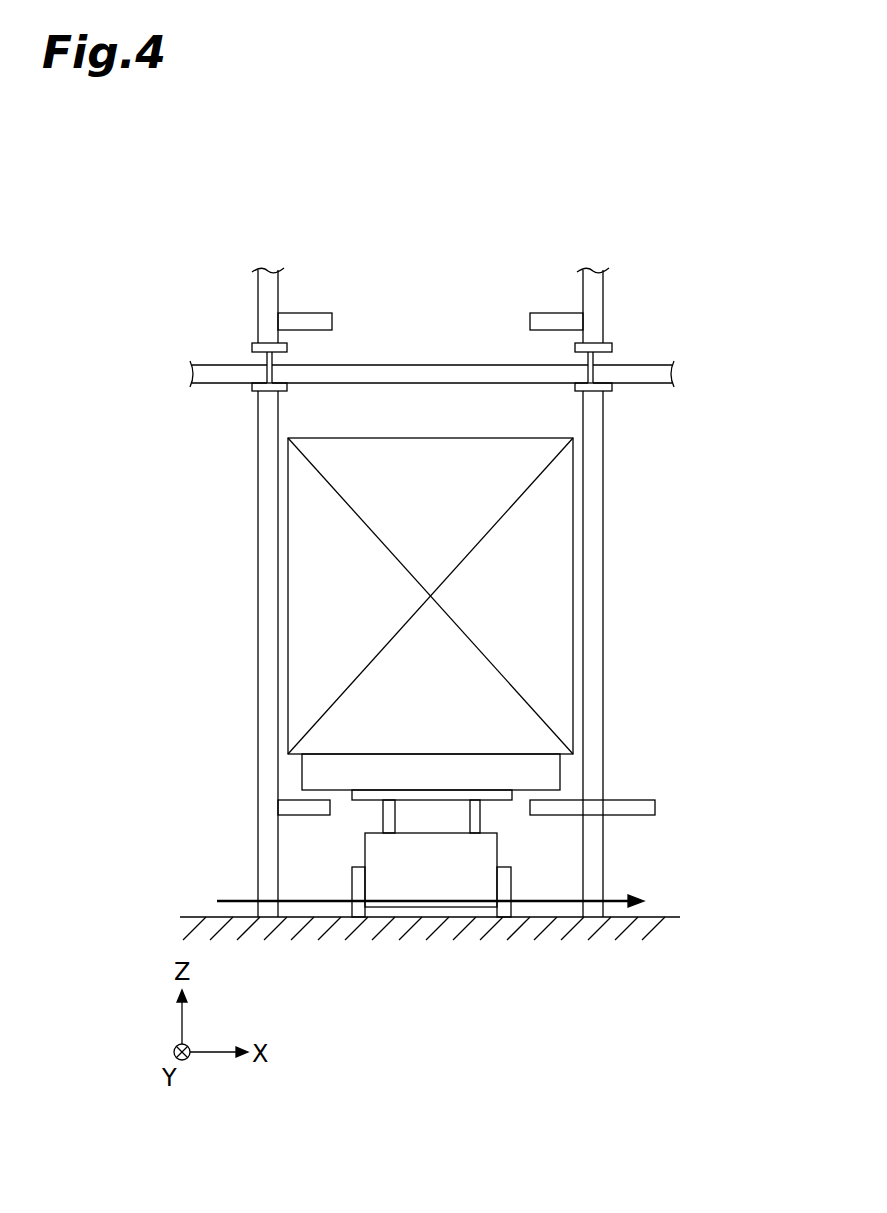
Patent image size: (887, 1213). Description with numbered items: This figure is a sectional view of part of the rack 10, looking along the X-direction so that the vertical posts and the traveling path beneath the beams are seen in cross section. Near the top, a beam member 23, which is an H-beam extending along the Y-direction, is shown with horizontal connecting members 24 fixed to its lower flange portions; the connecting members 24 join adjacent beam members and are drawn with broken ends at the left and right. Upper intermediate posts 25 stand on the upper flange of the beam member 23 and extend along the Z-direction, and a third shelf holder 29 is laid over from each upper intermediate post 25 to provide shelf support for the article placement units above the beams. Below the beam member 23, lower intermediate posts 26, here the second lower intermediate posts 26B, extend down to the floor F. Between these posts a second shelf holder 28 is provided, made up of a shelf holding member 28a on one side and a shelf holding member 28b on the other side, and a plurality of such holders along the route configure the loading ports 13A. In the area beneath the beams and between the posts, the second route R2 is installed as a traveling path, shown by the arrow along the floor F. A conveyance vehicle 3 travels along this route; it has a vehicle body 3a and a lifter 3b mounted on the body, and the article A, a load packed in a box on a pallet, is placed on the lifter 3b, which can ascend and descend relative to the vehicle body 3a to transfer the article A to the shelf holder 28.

The rack 10 is at (513, 187).
The upper intermediate post 25 is at (266, 295).
The third shelf holder 29 is at (307, 320).
The horizontal connecting member 24 is at (437, 373).
The beam member 23 is at (257, 348).
The lower intermediate post 26 is at (435, 654).
The second lower intermediate post 26B is at (268, 588).
The loading port 13A is at (456, 426).
The article A is at (560, 522).
The second shelf holder 28 is at (436, 789).
The shelf holding member 28a is at (296, 802).
The shelf holding member 28b is at (566, 807).
The conveyance vehicle 3 is at (430, 835).
The vehicle body 3a is at (373, 850).
The lifter 3b is at (367, 795).
The second route R2 is at (230, 898).
The floor F is at (660, 914).